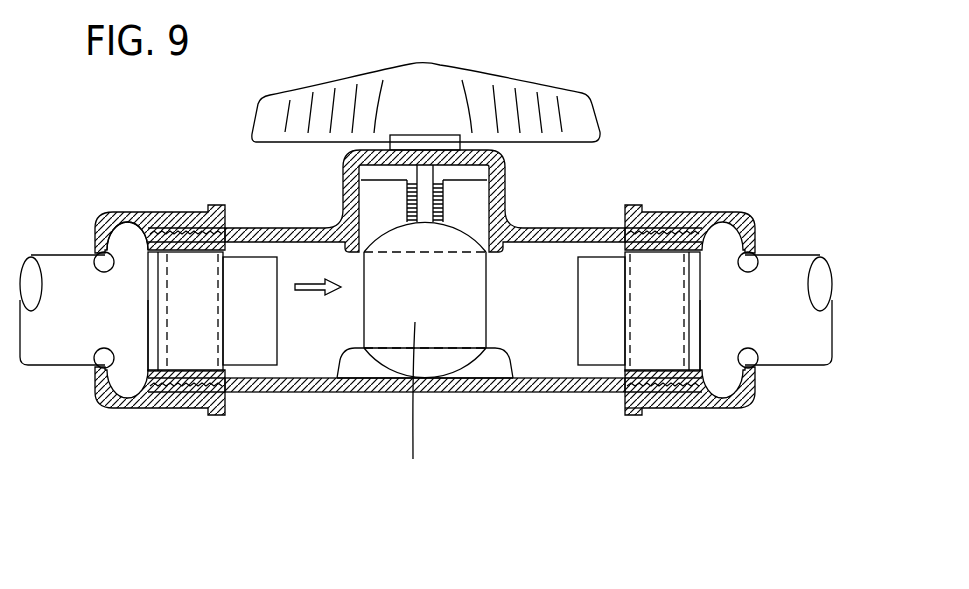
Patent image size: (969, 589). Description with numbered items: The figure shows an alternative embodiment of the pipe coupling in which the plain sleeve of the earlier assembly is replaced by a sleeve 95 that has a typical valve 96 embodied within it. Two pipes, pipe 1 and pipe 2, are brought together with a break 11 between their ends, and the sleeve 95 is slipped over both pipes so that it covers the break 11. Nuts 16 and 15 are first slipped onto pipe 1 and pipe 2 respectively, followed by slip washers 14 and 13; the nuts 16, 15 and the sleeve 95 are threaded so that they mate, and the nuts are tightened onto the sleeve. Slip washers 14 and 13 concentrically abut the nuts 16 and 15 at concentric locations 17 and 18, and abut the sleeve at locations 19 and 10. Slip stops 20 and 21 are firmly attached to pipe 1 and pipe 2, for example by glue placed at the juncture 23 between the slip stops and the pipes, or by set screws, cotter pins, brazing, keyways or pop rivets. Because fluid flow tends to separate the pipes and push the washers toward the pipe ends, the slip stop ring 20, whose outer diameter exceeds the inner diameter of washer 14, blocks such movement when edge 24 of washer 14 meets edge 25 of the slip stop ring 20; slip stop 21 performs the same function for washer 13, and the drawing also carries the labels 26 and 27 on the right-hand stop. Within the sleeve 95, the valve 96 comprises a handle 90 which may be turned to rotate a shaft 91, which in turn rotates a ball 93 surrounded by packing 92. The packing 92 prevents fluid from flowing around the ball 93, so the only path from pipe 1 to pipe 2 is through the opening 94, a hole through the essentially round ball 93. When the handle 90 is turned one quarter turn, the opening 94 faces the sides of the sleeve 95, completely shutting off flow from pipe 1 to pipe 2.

The pipe 1 is at (44, 366).
The pipe 2 is at (806, 365).
The concentric location 10 is at (734, 214).
The break 11 is at (540, 302).
The slip washer 13 is at (753, 347).
The slip washer 14 is at (93, 351).
The nut 15 is at (668, 410).
The nut 16 is at (188, 408).
The concentric location 17 is at (100, 274).
The concentric location 18 is at (748, 270).
The concentric location 19 is at (118, 226).
The slip stop ring 20 is at (197, 312).
The slip stop 21 is at (653, 312).
The juncture 23 is at (230, 365).
The edge of washer 24 is at (152, 300).
The edge of slip stop ring 25 is at (152, 343).
The sleeve wall 26 is at (692, 335).
The sleeve wall 27 is at (699, 300).
The handle 90 is at (507, 80).
The shaft 91 is at (430, 175).
The packing 92 is at (378, 220).
The ball 93 is at (435, 362).
The opening 94 is at (418, 403).
The sleeve 95 is at (310, 395).
The valve 96 is at (604, 114).